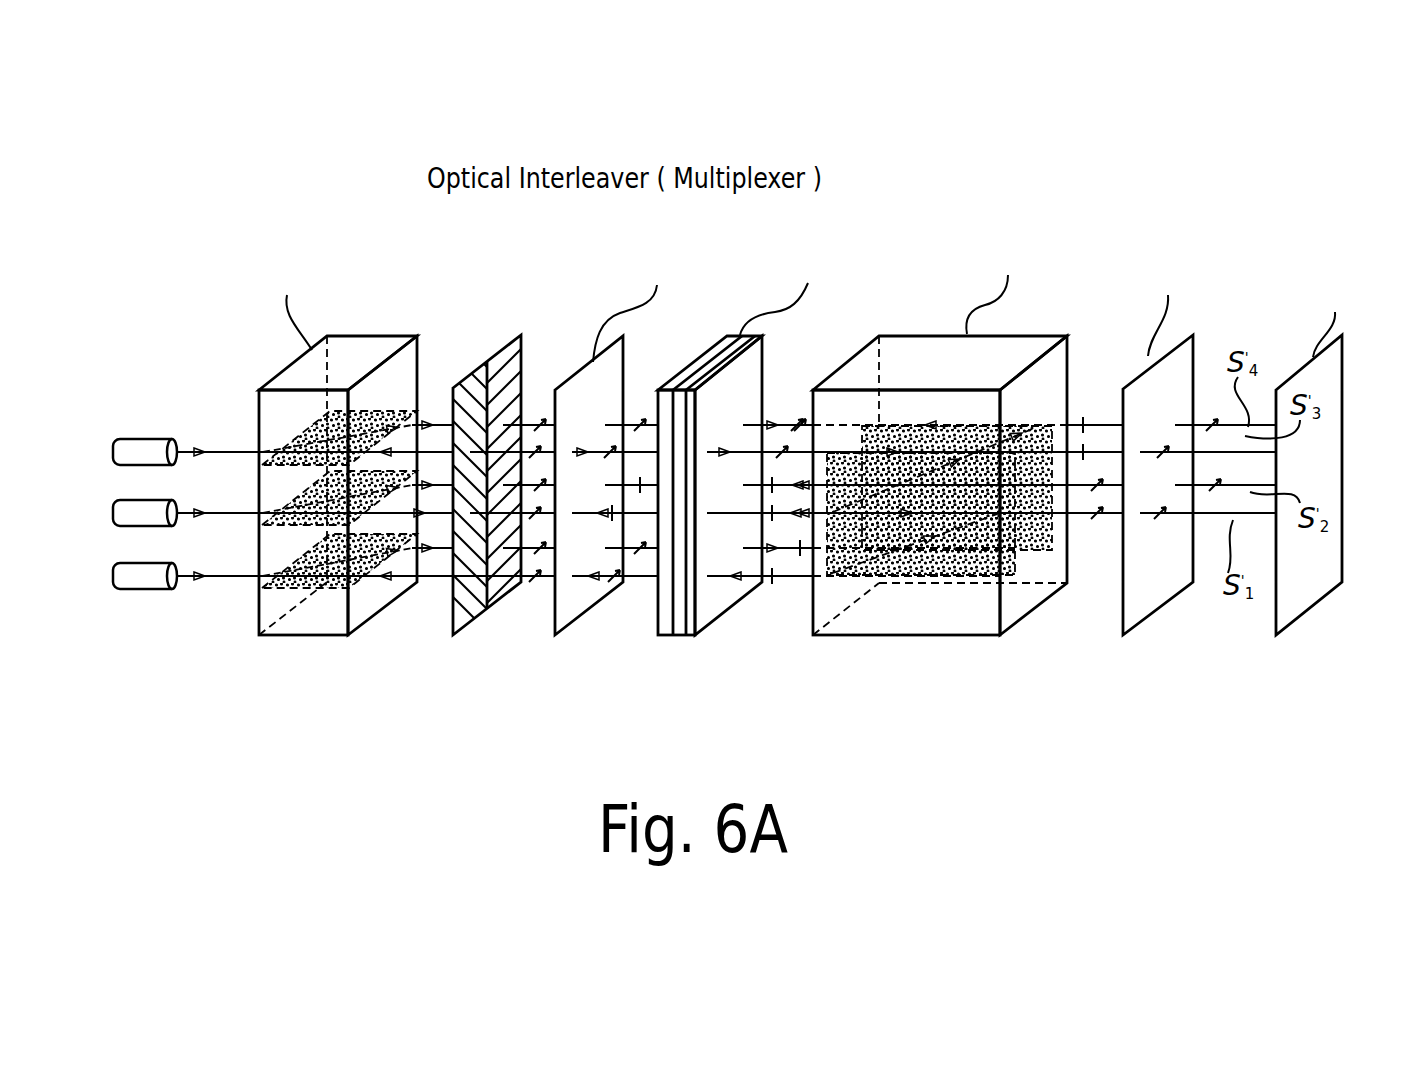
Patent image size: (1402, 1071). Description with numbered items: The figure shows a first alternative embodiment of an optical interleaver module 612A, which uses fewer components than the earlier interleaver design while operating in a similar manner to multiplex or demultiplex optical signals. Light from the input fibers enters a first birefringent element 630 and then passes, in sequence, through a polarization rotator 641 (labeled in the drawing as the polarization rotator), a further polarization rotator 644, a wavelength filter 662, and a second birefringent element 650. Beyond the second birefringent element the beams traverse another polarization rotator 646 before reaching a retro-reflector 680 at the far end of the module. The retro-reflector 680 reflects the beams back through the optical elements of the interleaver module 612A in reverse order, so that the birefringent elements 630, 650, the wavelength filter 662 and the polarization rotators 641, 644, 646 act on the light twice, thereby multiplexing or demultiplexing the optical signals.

The optical interleaver module 612A is at (167, 340).
The first birefringent element 630 is at (330, 635).
The polarization rotator 641 is at (535, 360).
The polarization rotator 644 is at (593, 610).
The wavelength filter 662 is at (722, 615).
The second birefringent element 650 is at (915, 635).
The polarization rotator 646 is at (1153, 613).
The retro-reflector 680 is at (1293, 622).